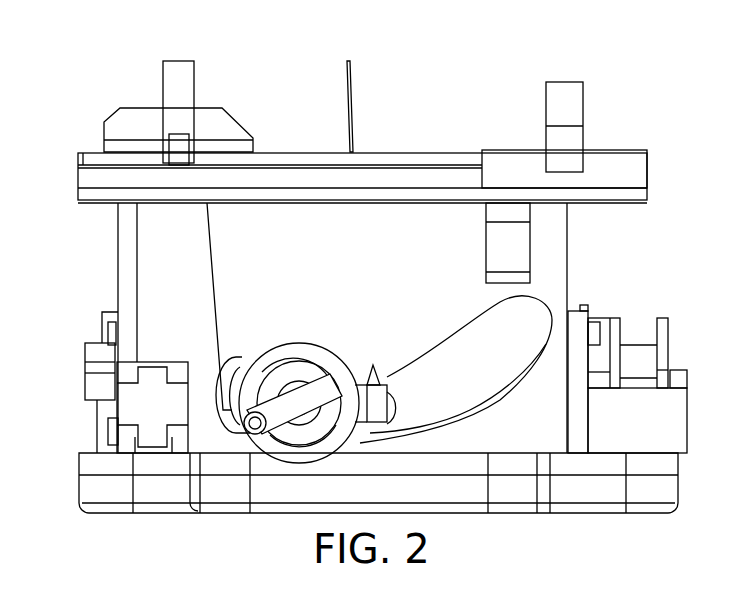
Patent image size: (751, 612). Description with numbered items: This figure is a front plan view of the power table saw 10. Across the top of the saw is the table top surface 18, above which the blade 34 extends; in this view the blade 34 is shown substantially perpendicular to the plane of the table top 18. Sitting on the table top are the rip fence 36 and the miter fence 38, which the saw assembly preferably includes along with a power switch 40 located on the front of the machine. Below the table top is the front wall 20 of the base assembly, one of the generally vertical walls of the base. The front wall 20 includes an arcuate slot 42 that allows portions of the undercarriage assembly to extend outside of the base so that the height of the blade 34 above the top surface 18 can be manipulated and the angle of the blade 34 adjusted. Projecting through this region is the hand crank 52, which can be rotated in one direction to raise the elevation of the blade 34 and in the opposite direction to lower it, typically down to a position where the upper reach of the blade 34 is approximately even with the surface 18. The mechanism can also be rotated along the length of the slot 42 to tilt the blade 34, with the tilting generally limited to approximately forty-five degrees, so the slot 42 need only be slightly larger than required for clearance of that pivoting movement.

The power table saw 10 is at (653, 103).
The table top surface 18 is at (289, 152).
The front wall 20 is at (405, 235).
The blade 34 is at (354, 100).
The rip fence 36 is at (558, 82).
The miter fence 38 is at (177, 84).
The power switch 40 is at (150, 395).
The arcuate slot 42 is at (446, 357).
The hand crank 52 is at (311, 352).